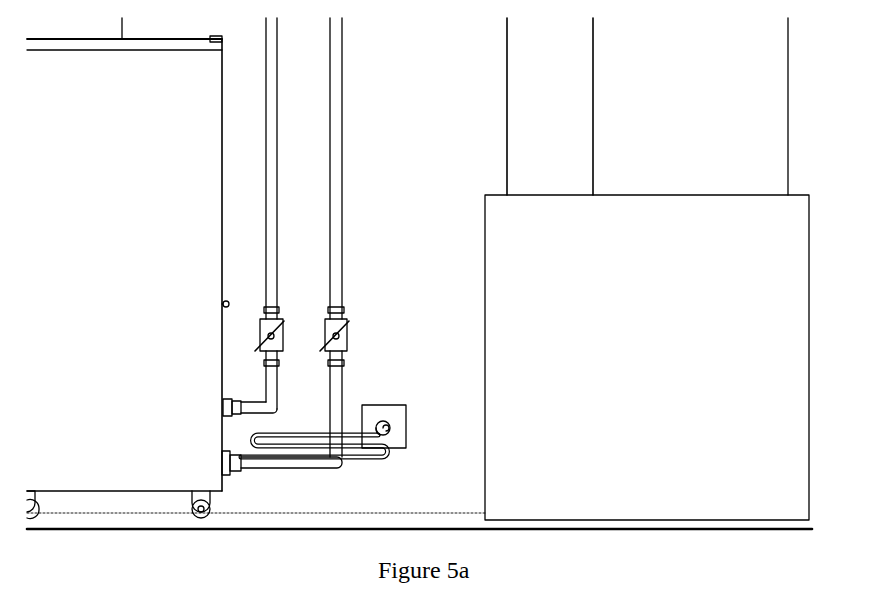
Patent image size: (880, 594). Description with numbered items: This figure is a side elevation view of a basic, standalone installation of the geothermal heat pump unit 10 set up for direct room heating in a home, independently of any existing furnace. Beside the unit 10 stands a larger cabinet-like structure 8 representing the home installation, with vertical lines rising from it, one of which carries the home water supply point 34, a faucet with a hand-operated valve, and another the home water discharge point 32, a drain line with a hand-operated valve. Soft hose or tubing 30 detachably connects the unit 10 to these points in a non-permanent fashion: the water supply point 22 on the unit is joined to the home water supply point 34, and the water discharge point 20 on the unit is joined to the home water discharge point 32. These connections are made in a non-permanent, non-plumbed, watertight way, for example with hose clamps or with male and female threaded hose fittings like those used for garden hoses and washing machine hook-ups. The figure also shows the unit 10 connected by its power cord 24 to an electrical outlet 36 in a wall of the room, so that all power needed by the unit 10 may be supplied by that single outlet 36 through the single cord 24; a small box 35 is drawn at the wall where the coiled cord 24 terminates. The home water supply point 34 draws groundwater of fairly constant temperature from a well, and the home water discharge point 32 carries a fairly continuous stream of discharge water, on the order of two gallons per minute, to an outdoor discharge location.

The appliance housing 8 is at (612, 257).
The heat pump unit 10 is at (222, 128).
The water discharge point 20 is at (228, 474).
The water supply point 22 is at (228, 398).
The power cord 24 is at (367, 462).
The soft hose or tubing 30 is at (338, 388).
The home water discharge point 32 is at (348, 320).
The home water supply point 34 is at (283, 322).
The hose reel box 35 is at (386, 404).
The electrical outlet 36 is at (276, 409).